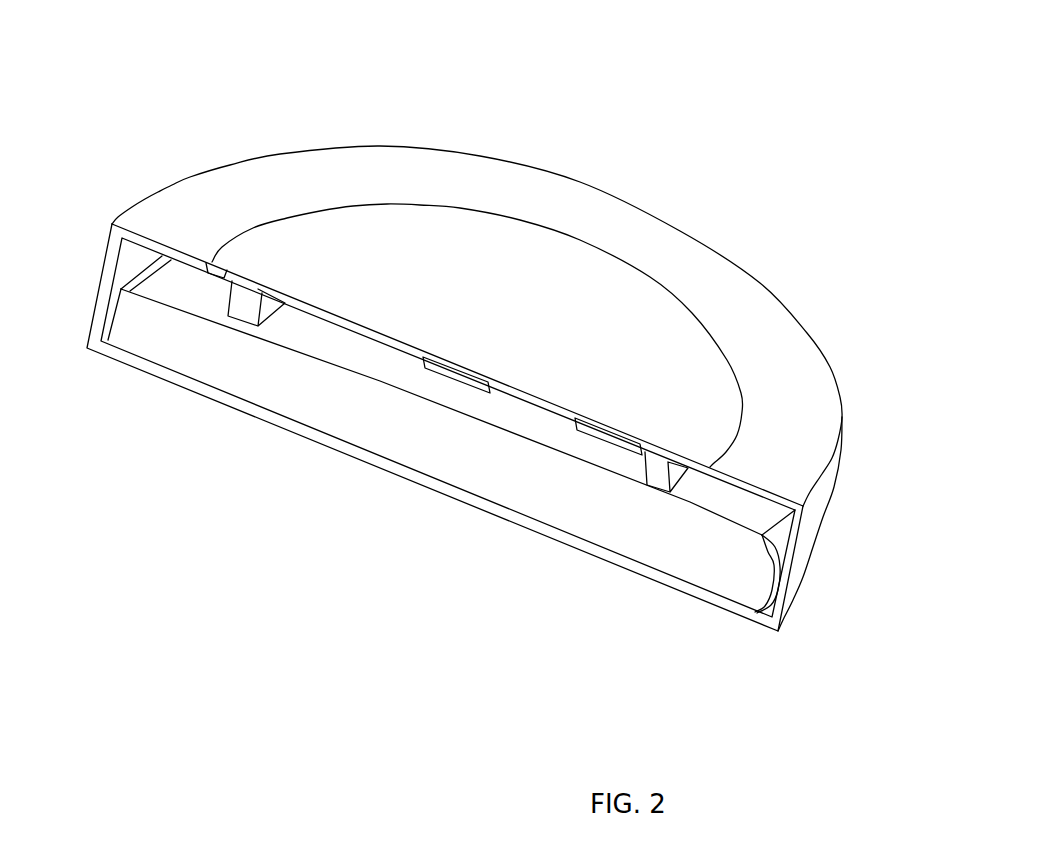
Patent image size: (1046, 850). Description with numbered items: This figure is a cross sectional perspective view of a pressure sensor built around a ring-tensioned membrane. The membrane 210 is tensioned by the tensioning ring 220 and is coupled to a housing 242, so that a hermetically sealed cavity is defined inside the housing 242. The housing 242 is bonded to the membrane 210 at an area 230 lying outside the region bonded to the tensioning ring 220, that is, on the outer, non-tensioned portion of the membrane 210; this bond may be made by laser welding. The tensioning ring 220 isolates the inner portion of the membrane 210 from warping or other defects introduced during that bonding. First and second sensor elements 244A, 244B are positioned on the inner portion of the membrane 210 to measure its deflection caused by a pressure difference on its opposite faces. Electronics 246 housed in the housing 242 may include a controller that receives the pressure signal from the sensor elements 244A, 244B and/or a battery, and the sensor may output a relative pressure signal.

The membrane 210 is at (548, 300).
The tensioning ring 220 is at (662, 470).
The area 230 is at (208, 262).
The housing 242 is at (227, 407).
The first sensor element 244A is at (462, 377).
The second sensor element 244B is at (592, 428).
The electronics 246 is at (330, 413).